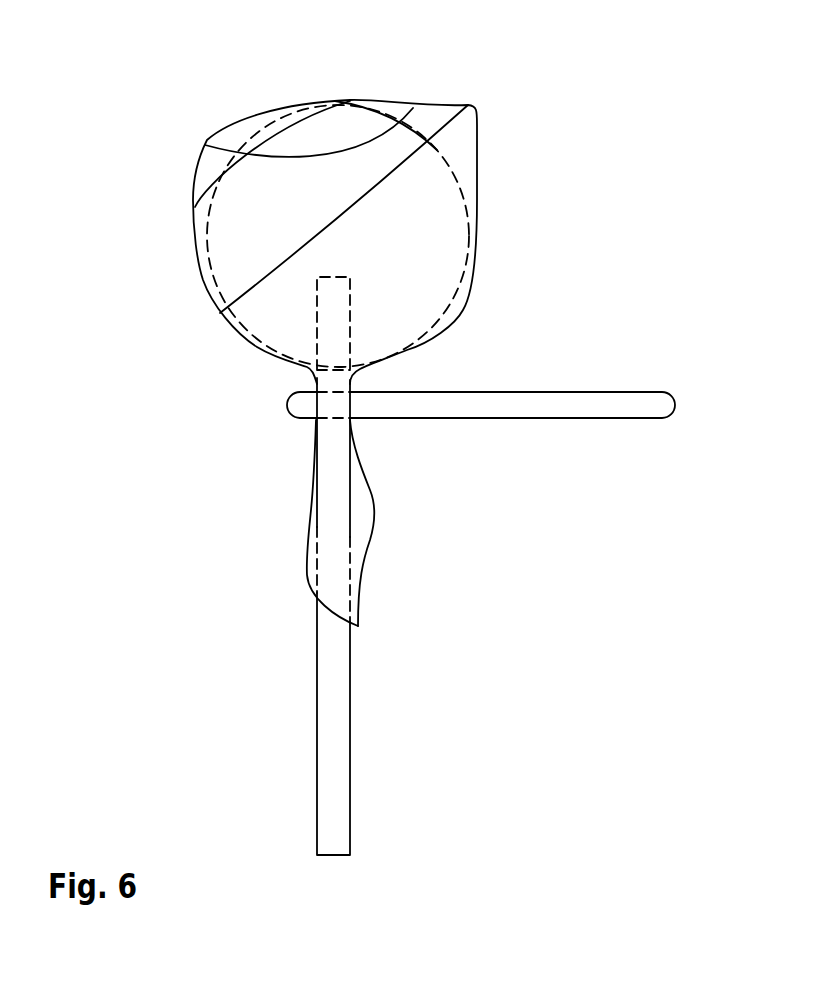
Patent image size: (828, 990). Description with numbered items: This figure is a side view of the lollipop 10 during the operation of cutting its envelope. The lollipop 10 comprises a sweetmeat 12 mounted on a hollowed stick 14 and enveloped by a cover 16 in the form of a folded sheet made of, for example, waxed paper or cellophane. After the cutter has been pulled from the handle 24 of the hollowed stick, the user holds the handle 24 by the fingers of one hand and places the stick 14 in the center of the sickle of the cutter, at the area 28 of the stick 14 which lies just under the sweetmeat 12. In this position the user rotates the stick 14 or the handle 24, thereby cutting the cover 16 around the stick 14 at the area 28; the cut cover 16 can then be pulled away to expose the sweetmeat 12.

The lollipop 10 is at (565, 316).
The sweetmeat 12 is at (282, 243).
The lollipop stick 14 is at (338, 688).
The cover 16 is at (477, 200).
The handle 24 is at (525, 407).
The area of the stick where it meets the sweetmeat 28 is at (260, 470).